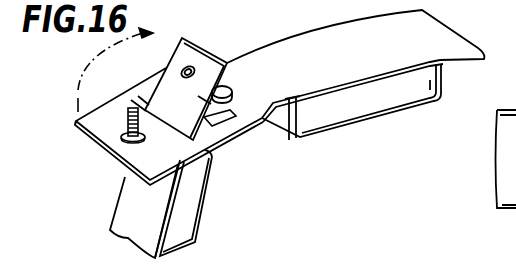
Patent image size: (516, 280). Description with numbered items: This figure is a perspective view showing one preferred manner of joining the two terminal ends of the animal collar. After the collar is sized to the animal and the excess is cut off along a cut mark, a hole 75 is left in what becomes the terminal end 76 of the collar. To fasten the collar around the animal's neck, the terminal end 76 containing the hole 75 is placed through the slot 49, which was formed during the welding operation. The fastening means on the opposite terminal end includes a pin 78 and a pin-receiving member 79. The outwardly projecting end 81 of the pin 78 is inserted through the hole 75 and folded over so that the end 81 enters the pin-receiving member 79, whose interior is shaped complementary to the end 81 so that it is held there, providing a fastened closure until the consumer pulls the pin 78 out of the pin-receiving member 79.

The slot 49 is at (218, 128).
The hole 75 is at (192, 70).
The terminal end 76 is at (170, 62).
The pin 78 is at (128, 142).
The pin-receiving member 79 is at (230, 89).
The outwardly projecting end 81 is at (76, 121).